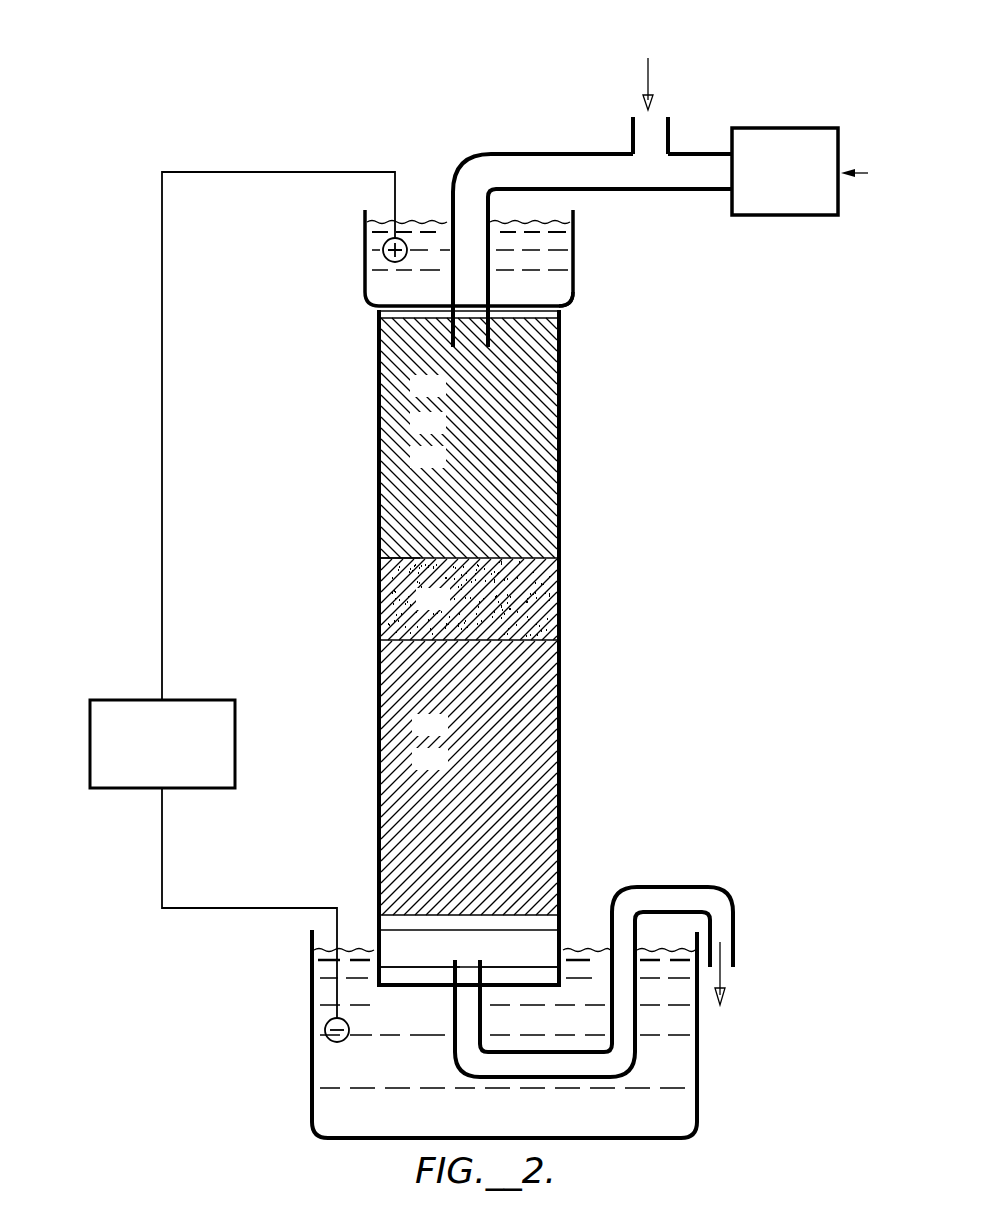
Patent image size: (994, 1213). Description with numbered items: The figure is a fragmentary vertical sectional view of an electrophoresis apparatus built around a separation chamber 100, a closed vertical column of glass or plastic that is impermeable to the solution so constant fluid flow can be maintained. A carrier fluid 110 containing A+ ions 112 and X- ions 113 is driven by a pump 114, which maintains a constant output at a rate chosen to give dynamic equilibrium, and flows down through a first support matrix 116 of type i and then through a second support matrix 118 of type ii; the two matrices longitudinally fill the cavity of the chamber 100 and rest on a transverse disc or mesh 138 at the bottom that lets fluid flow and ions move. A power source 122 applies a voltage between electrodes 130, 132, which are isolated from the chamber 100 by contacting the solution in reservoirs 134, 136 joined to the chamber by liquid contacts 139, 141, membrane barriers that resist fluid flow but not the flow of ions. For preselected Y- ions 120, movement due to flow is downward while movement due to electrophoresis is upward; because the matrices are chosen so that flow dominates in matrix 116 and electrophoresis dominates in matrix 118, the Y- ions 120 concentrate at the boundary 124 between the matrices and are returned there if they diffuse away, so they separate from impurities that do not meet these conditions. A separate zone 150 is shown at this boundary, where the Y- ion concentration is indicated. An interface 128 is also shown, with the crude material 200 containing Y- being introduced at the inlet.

The separation chamber 100 is at (352, 436).
The carrier fluid 110 is at (652, 190).
The A+ ions 112 is at (513, 153).
The X- ions 113 is at (549, 153).
The pump 114 is at (820, 128).
The first support matrix 116 is at (548, 457).
The second support matrix 118 is at (540, 769).
The Y- ions 120 is at (546, 560).
The power source 122 is at (210, 700).
The boundary 124 is at (386, 560).
The lower interface 128 is at (548, 642).
The electrode 130 is at (382, 248).
The electrode 132 is at (325, 1028).
The reservoir 134 is at (562, 294).
The reservoir 136 is at (332, 1108).
The transverse disc or mesh 138 is at (394, 921).
The liquid contact 139 is at (424, 978).
The liquid contact 141 is at (569, 310).
The Y- ion zone 150 is at (395, 596).
The crude material containing Y- 200 is at (745, 30).